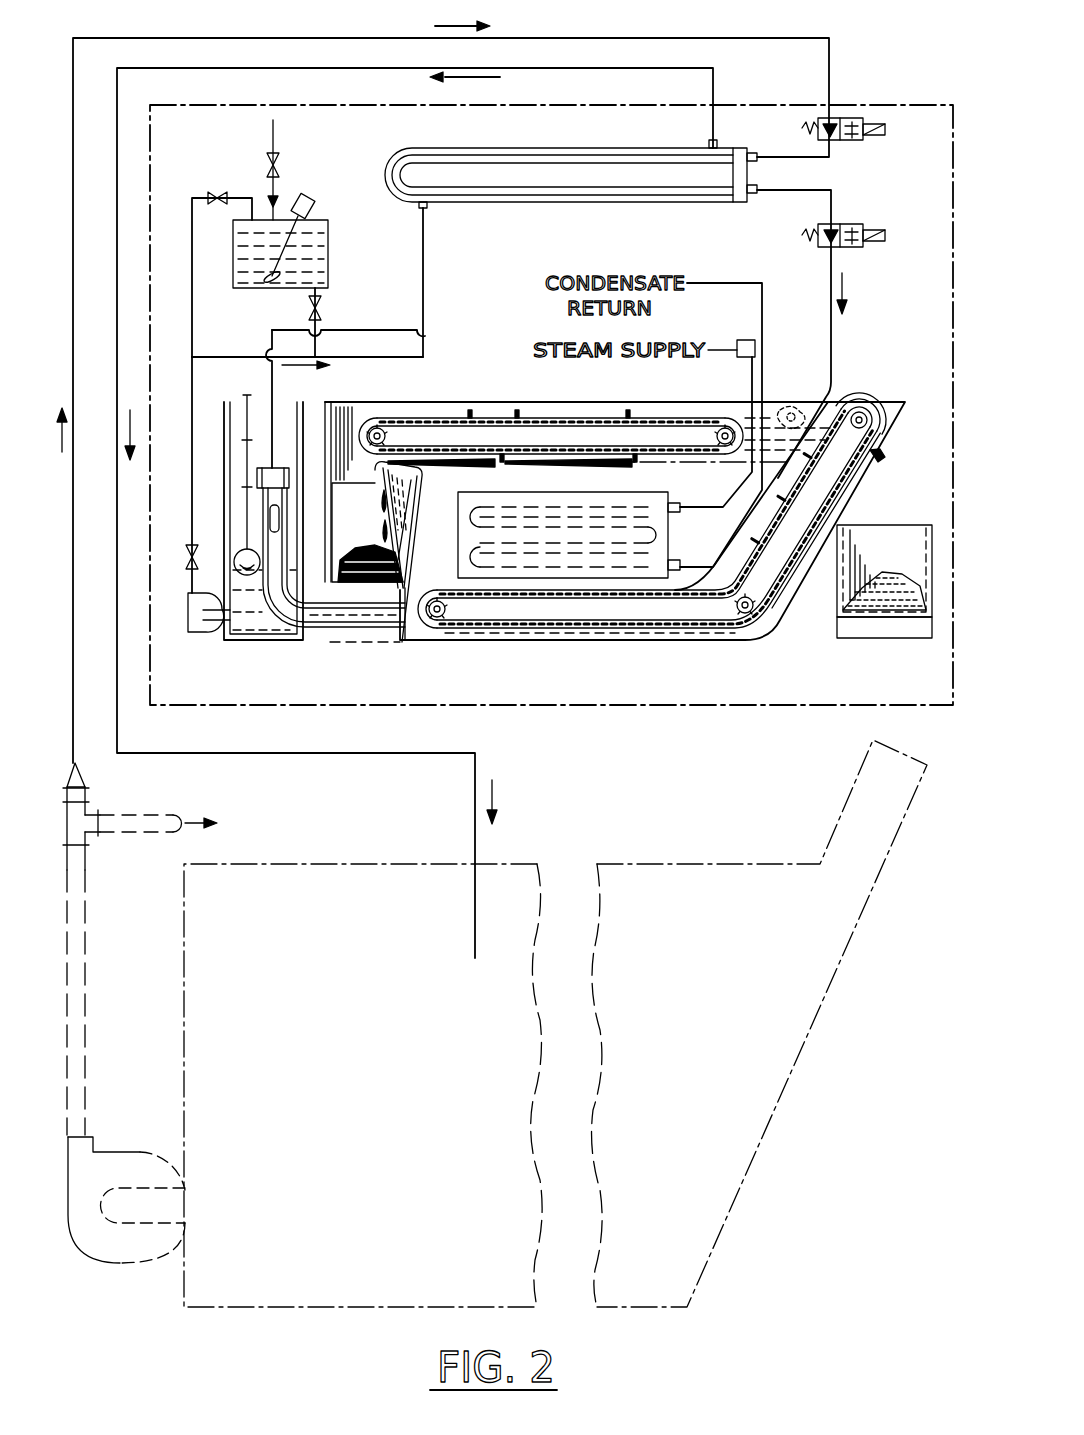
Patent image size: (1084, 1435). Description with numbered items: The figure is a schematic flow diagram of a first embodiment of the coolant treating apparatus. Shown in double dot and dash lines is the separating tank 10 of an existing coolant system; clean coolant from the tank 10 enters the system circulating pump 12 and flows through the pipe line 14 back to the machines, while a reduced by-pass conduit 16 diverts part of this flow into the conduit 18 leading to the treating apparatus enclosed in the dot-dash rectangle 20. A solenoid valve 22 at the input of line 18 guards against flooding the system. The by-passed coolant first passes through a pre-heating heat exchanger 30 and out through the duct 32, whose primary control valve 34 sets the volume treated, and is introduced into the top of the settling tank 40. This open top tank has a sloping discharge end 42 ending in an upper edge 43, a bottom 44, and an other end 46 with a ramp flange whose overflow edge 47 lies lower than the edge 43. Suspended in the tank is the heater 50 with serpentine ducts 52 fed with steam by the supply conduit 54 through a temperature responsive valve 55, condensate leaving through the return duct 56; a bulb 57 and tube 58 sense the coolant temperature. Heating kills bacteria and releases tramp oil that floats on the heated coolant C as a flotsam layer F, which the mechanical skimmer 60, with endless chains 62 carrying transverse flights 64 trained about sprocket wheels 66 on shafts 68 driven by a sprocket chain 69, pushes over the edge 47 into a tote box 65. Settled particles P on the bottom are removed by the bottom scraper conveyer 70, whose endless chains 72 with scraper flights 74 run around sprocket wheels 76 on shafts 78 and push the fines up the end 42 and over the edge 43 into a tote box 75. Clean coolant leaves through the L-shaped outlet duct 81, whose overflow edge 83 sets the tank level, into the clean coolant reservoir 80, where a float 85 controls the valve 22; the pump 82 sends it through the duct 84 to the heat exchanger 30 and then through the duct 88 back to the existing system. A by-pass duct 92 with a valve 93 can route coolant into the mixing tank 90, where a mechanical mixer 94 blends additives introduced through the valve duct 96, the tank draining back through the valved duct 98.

The separating tank 10 is at (797, 1061).
The system circulating pump 12 is at (120, 1150).
The pipe line 14 is at (146, 815).
The by-pass conduit 16 is at (84, 778).
The conduit 18 is at (832, 84).
The treating apparatus 20 is at (710, 711).
The solenoid valve 22 is at (862, 142).
The pre-heating heat exchanger 30 is at (393, 153).
The duct 32 is at (833, 194).
The primary control valve 34 is at (858, 224).
The settling tank 40 is at (469, 400).
The sloping discharge end 42 is at (850, 503).
The upper edge 43 is at (886, 458).
The bottom 44 is at (612, 642).
The other end 46 is at (417, 520).
The overflow edge 47 is at (405, 462).
The heater 50 is at (560, 538).
The serpentine ducts 52 is at (669, 530).
The supply conduit 54 is at (764, 364).
The temperature responsive valve 55 is at (757, 345).
The return duct 56 is at (764, 300).
The bulb 57 is at (270, 515).
The tube 58 is at (270, 336).
The mechanical skimmer 60 is at (539, 413).
The endless chains 62 is at (680, 420).
The transverse flights 64 is at (643, 446).
The tote box 65 is at (343, 520).
The sprocket wheels 66 is at (372, 425).
The shafts 68 is at (721, 416).
The sprocket chain 69 is at (773, 418).
The bottom scraper conveyer 70 is at (786, 603).
The endless chains 72 is at (615, 629).
The scraper flights 74 is at (662, 531).
The tote box 75 is at (915, 525).
The sprocket wheels 76 is at (437, 616).
The shafts 78 is at (866, 408).
The clean coolant reservoir 80 is at (258, 642).
The L-shaped outlet duct 81 is at (318, 628).
The pump 82 is at (194, 633).
The overflow edge 83 is at (265, 470).
The duct 84 is at (194, 383).
The float 85 is at (240, 556).
The duct 88 is at (116, 276).
The mixing tank 90 is at (332, 268).
The by-pass duct 92 is at (190, 212).
The valve 93 is at (215, 195).
The mechanical mixer 94 is at (311, 200).
The valve duct 96 is at (275, 166).
The valved duct 98 is at (311, 309).
The flotsam layer F is at (594, 455).
The heated coolant C is at (670, 490).
The settled particles P is at (514, 640).